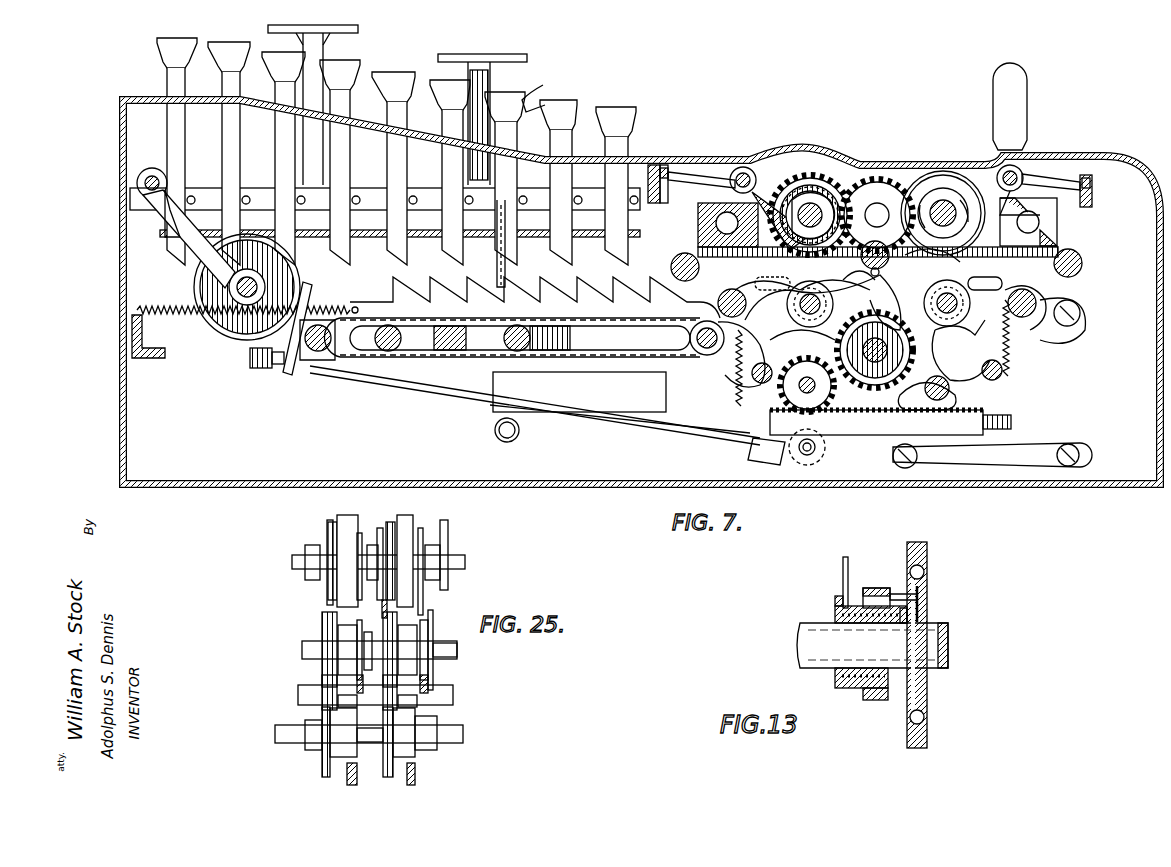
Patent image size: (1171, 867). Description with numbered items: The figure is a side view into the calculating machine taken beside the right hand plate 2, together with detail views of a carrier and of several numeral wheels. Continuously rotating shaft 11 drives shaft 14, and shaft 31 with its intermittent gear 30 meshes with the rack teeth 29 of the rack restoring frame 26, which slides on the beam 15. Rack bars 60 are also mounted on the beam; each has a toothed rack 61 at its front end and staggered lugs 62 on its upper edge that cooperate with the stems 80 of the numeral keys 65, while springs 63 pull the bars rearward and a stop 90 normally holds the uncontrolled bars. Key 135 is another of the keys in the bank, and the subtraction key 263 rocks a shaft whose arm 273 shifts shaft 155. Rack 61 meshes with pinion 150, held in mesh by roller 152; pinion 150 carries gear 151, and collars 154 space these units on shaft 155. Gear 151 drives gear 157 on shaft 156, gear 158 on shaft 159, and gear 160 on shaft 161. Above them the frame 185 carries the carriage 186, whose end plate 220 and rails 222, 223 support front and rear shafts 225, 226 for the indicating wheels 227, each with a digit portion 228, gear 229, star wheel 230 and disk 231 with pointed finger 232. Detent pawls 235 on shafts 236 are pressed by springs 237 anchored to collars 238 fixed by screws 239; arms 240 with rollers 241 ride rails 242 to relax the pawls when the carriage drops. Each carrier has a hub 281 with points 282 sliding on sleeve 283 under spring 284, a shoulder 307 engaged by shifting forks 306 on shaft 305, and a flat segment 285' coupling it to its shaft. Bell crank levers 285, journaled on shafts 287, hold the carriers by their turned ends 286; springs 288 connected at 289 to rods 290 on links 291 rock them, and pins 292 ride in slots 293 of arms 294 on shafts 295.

In FIG. 7, the right hand plate 2 is at (1090, 243).
In FIG. 7, the shaft 11 is at (398, 339).
In FIG. 7, the shaft 14 is at (243, 298).
In FIG. 7, the beam 15 is at (443, 325).
In FIG. 7, the rack restoring frame 26 is at (320, 350).
In FIG. 7, the rack teeth 29 is at (298, 360).
In FIG. 7, the intermittent gear 30 is at (493, 372).
In FIG. 7, the shaft 31 is at (520, 350).
In FIG. 7, the rack bar 60 is at (430, 378).
In FIG. 7, the toothed rack 61 is at (890, 422).
In FIG. 25, the toothed rack 61 is at (407, 777).
In FIG. 7, the staggered lug 62 is at (392, 285).
In FIG. 7, the spring 63 is at (190, 312).
In FIG. 7, the numeral key 65 is at (537, 90).
In FIG. 7, the key stem 80 is at (165, 76).
In FIG. 7, the stop 90 is at (497, 262).
In FIG. 7, the key 135 is at (480, 62).
In FIG. 7, the pinion 150 is at (808, 391).
In FIG. 25, the pinion 150 is at (415, 757).
In FIG. 7, the gear 151 is at (770, 380).
In FIG. 25, the gear 151 is at (322, 760).
In FIG. 7, the roller 152 is at (815, 448).
In FIG. 25, the collar 154 is at (372, 748).
In FIG. 7, the shaft 155 is at (807, 385).
In FIG. 25, the shaft 155 is at (463, 730).
In FIG. 7, the shaft 156 is at (827, 290).
In FIG. 25, the shaft 156 is at (302, 650).
In FIG. 13, the shaft 156 is at (930, 640).
In FIG. 7, the gear 157 is at (770, 305).
In FIG. 25, the gear 157 is at (322, 627).
In FIG. 13, the gear 157 is at (927, 560).
In FIG. 7, the gear 158 is at (905, 350).
In FIG. 25, the gear 158 is at (322, 707).
In FIG. 7, the shaft 159 is at (930, 290).
In FIG. 25, the shaft 159 is at (305, 692).
In FIG. 7, the gear 160 is at (968, 308).
In FIG. 7, the shaft 161 is at (950, 314).
In FIG. 7, the frame 185 is at (1070, 245).
In FIG. 7, the carriage 186 is at (910, 172).
In FIG. 7, the end plate 220 is at (868, 180).
In FIG. 7, the rail 222 is at (1013, 227).
In FIG. 7, the rail 223 is at (878, 231).
In FIG. 7, the front shaft 225 is at (943, 210).
In FIG. 7, the rear shaft 226 is at (812, 211).
In FIG. 7, the indicating wheel 227 is at (812, 172).
In FIG. 25, the indicating wheel 227 is at (360, 518).
In FIG. 25, the smooth portion 228 is at (420, 525).
In FIG. 7, the gear 229 is at (825, 175).
In FIG. 25, the gear 229 is at (332, 530).
In FIG. 7, the star wheel 230 is at (800, 170).
In FIG. 25, the star wheel 230 is at (315, 540).
In FIG. 7, the disk 231 is at (927, 252).
In FIG. 25, the disk 231 is at (424, 590).
In FIG. 7, the pointed finger 232 is at (878, 265).
In FIG. 7, the detent pawl 235 is at (676, 245).
In FIG. 7, the shaft 236 is at (743, 168).
In FIG. 7, the spring 237 is at (1022, 172).
In FIG. 7, the collar 238 is at (1015, 160).
In FIG. 7, the screw 239 is at (765, 168).
In FIG. 7, the arm 240 is at (690, 170).
In FIG. 7, the friction roller 241 is at (668, 178).
In FIG. 7, the rail 242 is at (653, 163).
In FIG. 7, the subtraction key 263 is at (356, 29).
In FIG. 7, the arm 273 is at (768, 460).
In FIG. 25, the hub section 281 is at (420, 650).
In FIG. 13, the hub section 281 is at (872, 700).
In FIG. 25, the carrier point 282 is at (433, 624).
In FIG. 13, the carrier point 282 is at (850, 565).
In FIG. 13, the sleeve 283 is at (927, 608).
In FIG. 13, the spring 284 is at (902, 598).
In FIG. 7, the bell crank lever 285 is at (943, 393).
In FIG. 13, the flat segment 285' is at (950, 615).
In FIG. 7, the laterally turned end 286 is at (805, 328).
In FIG. 25, the laterally turned end 286 is at (430, 680).
In FIG. 7, the shaft 287 is at (718, 295).
In FIG. 7, the spring 288 is at (752, 373).
In FIG. 7, the spring connection 289 is at (1067, 303).
In FIG. 7, the rod 290 is at (940, 330).
In FIG. 7, the link 291 is at (1044, 348).
In FIG. 7, the pin 292 is at (752, 280).
In FIG. 7, the slot 293 is at (760, 283).
In FIG. 7, the arm 294 is at (1025, 297).
In FIG. 7, the shaft 295 is at (1083, 264).
In FIG. 7, the shaft 305 is at (859, 274).
In FIG. 7, the shifting fork 306 is at (889, 276).
In FIG. 25, the shoulder 307 is at (450, 652).
In FIG. 13, the shoulder 307 is at (862, 690).